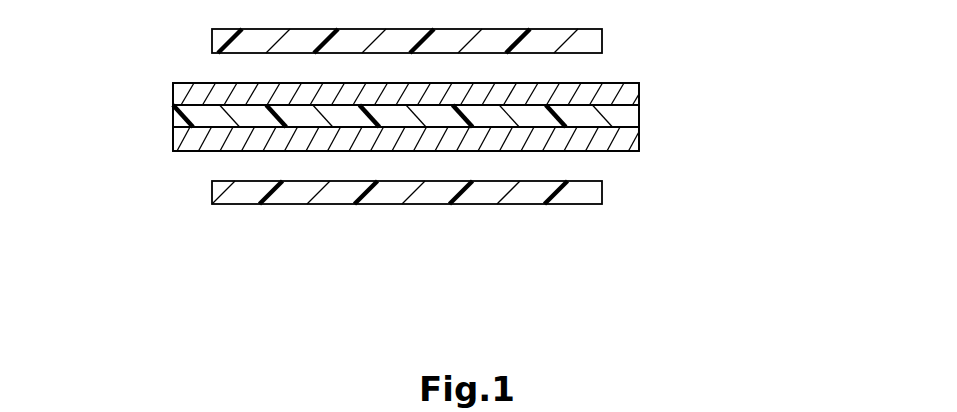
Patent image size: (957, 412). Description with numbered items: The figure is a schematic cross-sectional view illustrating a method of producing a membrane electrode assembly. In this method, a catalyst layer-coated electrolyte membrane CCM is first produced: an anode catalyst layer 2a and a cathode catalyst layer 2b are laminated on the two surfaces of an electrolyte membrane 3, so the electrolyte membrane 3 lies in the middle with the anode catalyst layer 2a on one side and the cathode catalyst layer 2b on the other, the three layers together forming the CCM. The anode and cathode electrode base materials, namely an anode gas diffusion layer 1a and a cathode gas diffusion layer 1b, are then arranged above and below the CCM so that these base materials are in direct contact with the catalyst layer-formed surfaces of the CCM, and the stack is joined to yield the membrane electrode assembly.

The anode gas diffusion layer 1a is at (602, 40).
The cathode gas diffusion layer 1b is at (602, 192).
The anode catalyst layer 2a is at (639, 93).
The cathode catalyst layer 2b is at (639, 137).
The electrolyte membrane 3 is at (173, 118).
The catalyst layer-coated electrolyte membrane CCM is at (459, 110).